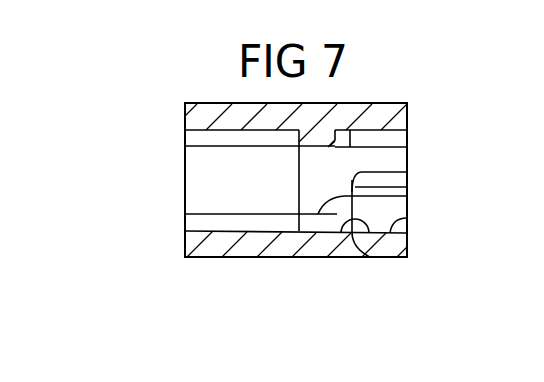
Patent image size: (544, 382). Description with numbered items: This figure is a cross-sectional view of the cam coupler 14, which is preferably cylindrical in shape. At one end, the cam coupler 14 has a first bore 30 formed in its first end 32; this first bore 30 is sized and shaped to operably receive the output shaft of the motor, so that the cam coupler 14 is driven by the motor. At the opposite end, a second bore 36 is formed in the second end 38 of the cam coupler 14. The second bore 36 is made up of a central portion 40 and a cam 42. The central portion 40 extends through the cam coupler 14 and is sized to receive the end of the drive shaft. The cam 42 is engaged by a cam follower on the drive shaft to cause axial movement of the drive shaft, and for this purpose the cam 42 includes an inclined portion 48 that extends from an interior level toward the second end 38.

The cam coupler 14 is at (370, 103).
The first bore 30 is at (200, 231).
The first end 32 is at (185, 118).
The second bore 36 is at (407, 219).
The second end 38 is at (407, 120).
The central portion 40 is at (407, 196).
The cam 42 is at (430, 146).
The inclined portion 48 is at (370, 257).